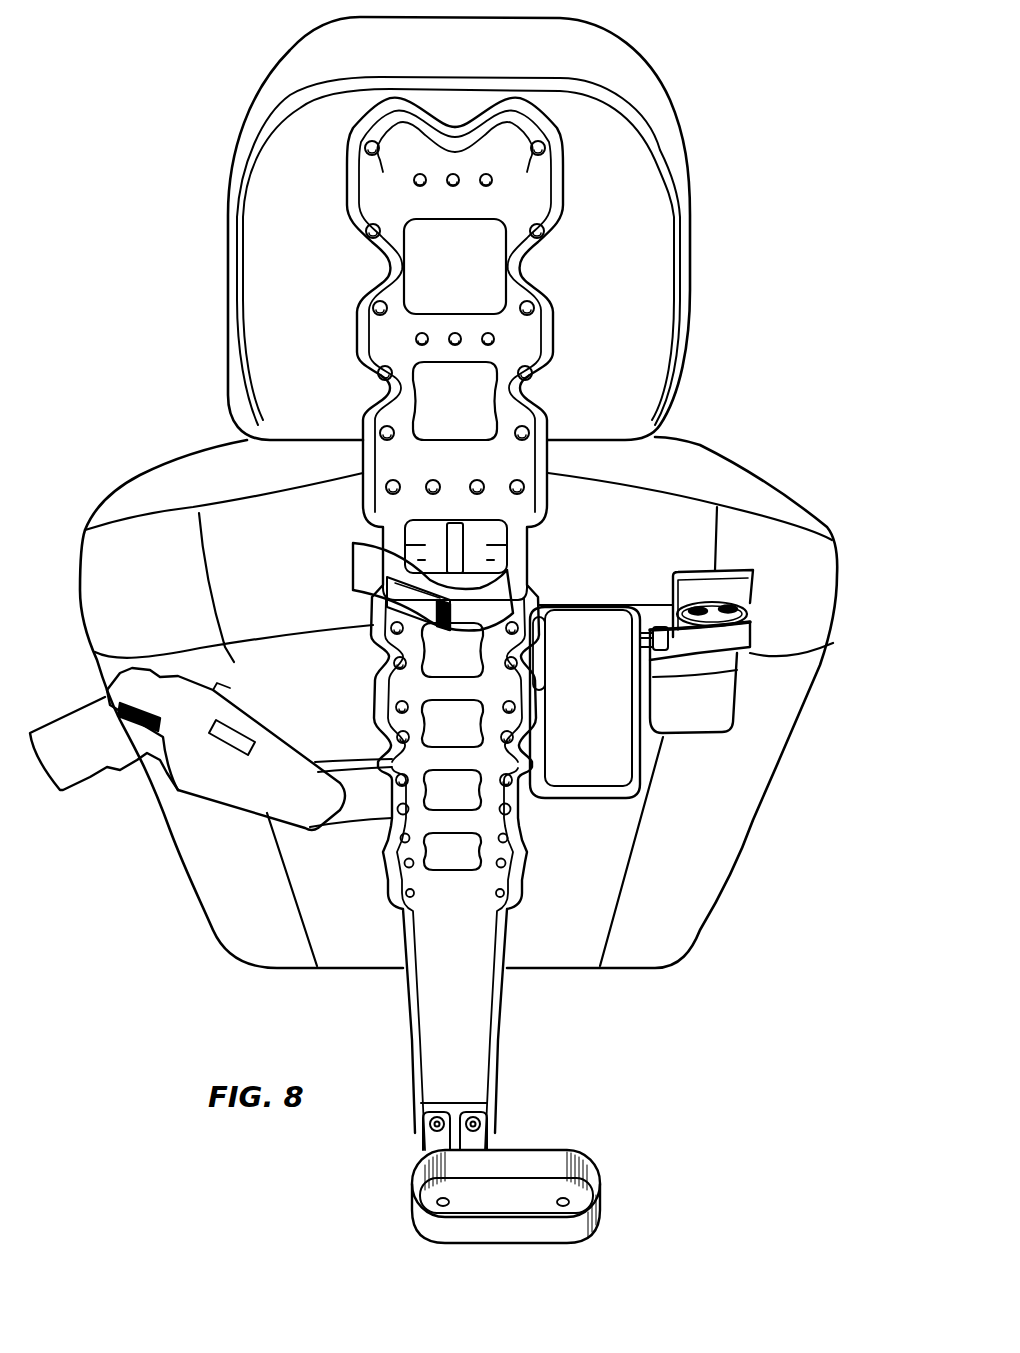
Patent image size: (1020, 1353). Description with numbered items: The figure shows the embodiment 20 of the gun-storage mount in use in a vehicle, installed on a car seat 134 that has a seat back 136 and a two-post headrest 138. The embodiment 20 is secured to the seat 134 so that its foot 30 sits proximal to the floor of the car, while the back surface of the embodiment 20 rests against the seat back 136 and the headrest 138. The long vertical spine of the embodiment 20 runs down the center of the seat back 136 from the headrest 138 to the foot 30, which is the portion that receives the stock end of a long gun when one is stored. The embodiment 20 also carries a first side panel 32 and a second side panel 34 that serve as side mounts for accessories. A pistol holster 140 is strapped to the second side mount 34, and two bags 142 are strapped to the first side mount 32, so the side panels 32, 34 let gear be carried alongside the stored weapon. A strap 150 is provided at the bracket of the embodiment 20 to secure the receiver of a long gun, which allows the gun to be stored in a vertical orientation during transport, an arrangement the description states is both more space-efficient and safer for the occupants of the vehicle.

The embodiment 20 is at (540, 194).
The foot 30 is at (507, 1233).
The first side panel 32 is at (645, 613).
The second side panel 34 is at (372, 810).
The seat 134 is at (177, 480).
The seat back 136 is at (616, 552).
The two-post headrest 138 is at (644, 274).
The pistol holster 140 is at (289, 792).
The bags 142 is at (609, 708).
The strap 150 is at (366, 567).